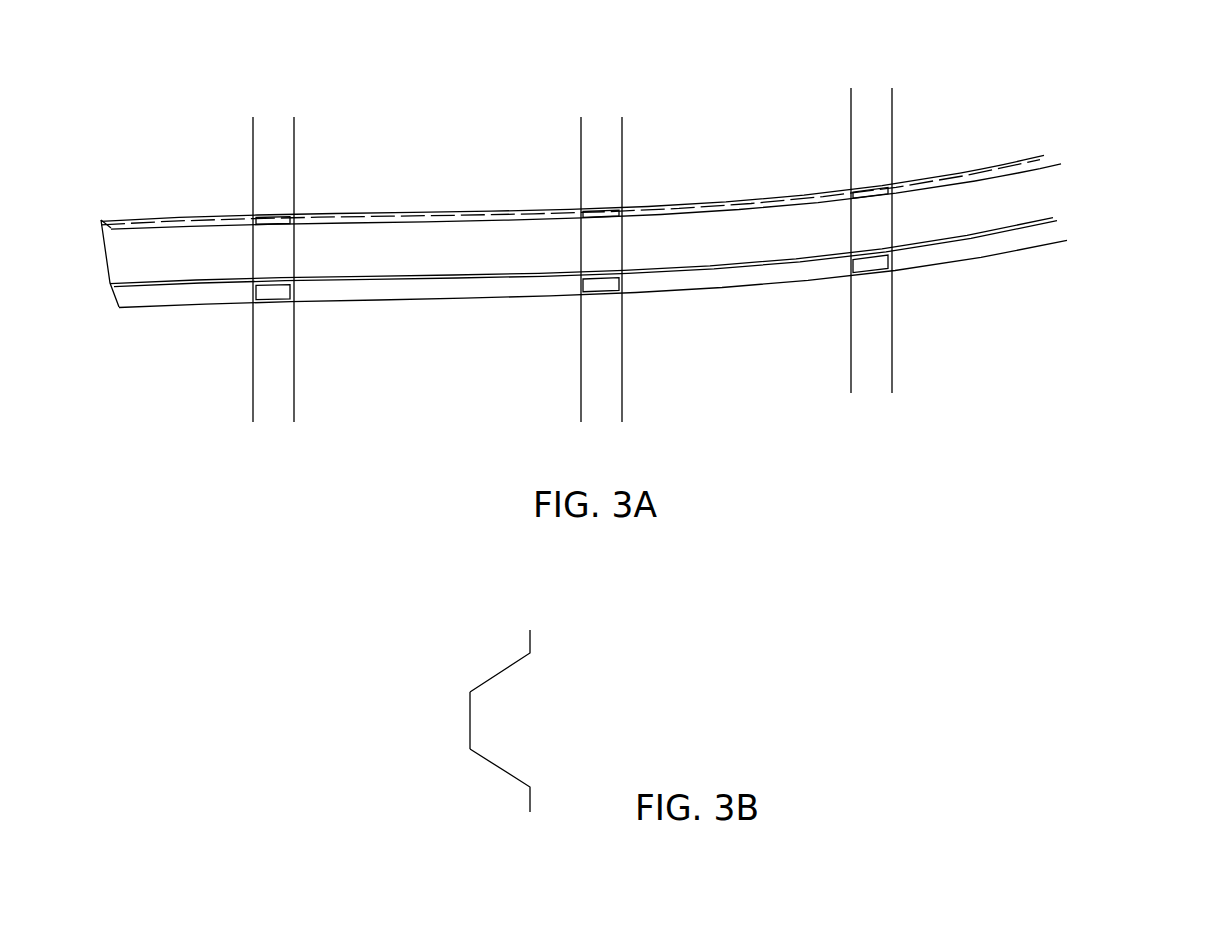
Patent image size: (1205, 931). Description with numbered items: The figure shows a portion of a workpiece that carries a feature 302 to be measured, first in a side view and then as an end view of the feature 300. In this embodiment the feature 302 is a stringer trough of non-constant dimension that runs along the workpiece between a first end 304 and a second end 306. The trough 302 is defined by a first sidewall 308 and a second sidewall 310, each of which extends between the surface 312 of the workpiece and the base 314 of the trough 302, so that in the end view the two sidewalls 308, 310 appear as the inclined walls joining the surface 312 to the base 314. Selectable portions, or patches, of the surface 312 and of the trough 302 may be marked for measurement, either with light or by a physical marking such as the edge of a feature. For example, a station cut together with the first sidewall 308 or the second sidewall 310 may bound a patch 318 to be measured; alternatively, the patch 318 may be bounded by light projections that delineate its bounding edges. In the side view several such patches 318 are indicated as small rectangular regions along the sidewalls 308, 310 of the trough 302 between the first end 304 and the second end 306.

In FIG. 3A, the feature 300 is at (150, 73).
In FIG. 3A, the feature 302 is at (1076, 193).
In FIG. 3A, the first end 304 is at (122, 217).
In FIG. 3A, the second end 306 is at (1005, 167).
In FIG. 3A, the first sidewall 308 is at (187, 225).
In FIG. 3B, the first sidewall 308 is at (508, 670).
In FIG. 3A, the second sidewall 310 is at (195, 297).
In FIG. 3B, the second sidewall 310 is at (508, 772).
In FIG. 3A, the surface 312 is at (458, 183).
In FIG. 3A, the base 314 is at (470, 260).
In FIG. 3B, the base 314 is at (470, 719).
In FIG. 3A, the patch 318 is at (612, 282).